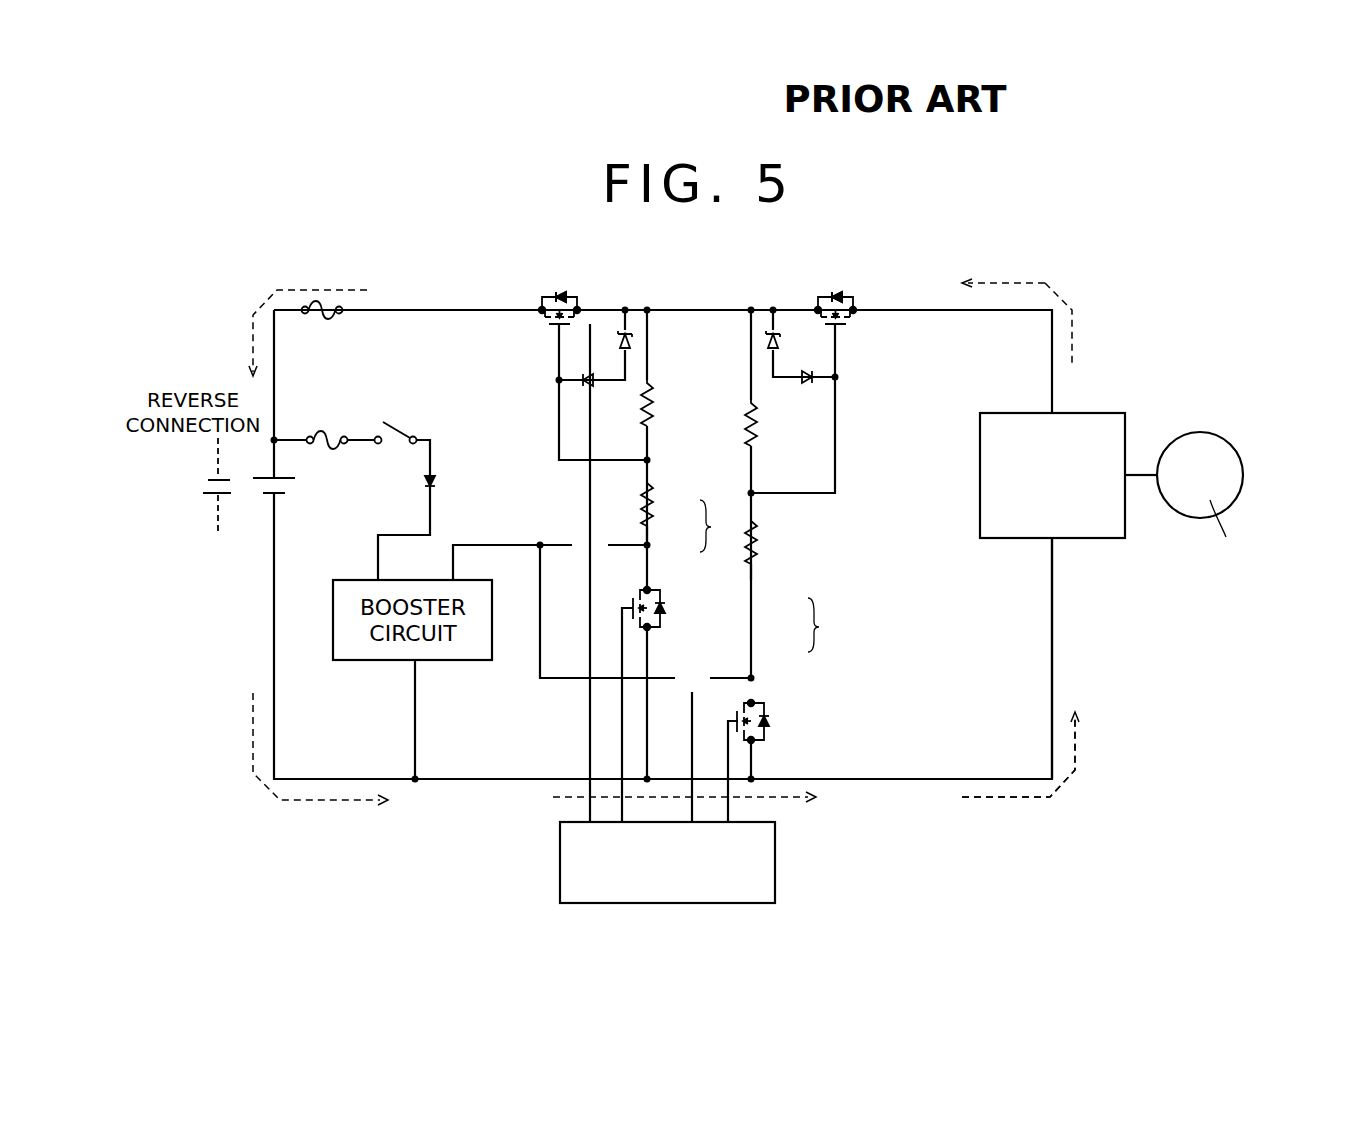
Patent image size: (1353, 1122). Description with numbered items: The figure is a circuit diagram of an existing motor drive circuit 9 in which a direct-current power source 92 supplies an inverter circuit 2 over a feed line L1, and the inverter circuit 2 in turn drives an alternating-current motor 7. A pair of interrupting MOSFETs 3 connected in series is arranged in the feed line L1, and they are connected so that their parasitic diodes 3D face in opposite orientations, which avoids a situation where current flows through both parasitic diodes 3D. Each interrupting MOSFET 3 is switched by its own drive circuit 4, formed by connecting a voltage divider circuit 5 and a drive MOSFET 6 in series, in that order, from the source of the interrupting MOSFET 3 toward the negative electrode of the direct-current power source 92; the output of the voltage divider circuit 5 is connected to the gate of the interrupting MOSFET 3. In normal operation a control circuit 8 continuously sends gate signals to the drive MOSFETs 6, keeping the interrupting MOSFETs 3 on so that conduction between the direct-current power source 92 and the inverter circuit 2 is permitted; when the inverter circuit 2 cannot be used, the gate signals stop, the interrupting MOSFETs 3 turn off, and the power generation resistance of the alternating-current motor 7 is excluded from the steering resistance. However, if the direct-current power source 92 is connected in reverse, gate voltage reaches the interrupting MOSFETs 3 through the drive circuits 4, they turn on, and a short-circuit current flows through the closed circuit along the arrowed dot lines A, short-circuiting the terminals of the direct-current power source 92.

The feed line L1 is at (403, 310).
The direct-current power source 92 is at (238, 487).
The interrupting MOSFET 3 is at (545, 322).
The parasitic diode 3D is at (560, 292).
The voltage divider circuit 5 is at (782, 526).
The drive MOSFET 6 is at (662, 582).
The drive circuit 4 is at (769, 576).
The inverter circuit 2 is at (1098, 413).
The alternating-current motor 7 is at (1193, 433).
The control circuit 8 is at (775, 855).
The motor drive circuit 9 is at (1087, 631).
The arrowed dot lines A is at (1030, 757).